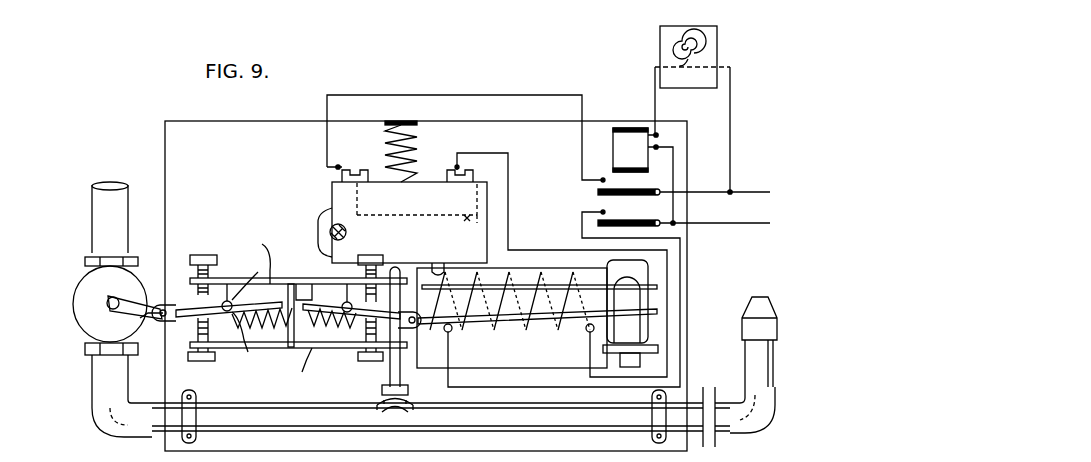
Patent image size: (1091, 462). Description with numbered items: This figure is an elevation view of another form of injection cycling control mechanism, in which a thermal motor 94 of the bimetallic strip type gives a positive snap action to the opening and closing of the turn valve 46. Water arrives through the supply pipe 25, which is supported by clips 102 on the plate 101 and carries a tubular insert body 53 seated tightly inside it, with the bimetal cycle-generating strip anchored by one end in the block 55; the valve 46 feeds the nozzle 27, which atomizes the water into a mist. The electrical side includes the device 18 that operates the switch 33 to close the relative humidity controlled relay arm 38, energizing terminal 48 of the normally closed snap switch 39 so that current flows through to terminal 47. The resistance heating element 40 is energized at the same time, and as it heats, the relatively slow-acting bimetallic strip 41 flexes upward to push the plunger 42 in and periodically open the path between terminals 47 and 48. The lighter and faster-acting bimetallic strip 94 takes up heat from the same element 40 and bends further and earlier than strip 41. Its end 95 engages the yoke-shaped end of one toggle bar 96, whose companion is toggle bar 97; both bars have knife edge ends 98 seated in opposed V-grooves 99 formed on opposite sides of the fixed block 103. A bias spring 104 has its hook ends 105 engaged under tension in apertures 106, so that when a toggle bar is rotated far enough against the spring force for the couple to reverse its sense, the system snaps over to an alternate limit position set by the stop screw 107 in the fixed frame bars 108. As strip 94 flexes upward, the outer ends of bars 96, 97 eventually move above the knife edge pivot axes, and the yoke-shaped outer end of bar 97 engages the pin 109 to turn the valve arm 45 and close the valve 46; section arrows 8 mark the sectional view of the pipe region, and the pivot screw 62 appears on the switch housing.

The section line arrows 8 is at (346, 396).
The device 18 is at (660, 44).
The supply pipe 25 is at (268, 422).
The nozzle 27 is at (742, 316).
The switch 33 is at (613, 148).
The relative humidity controlled relay arm 38 is at (650, 194).
The snap switch 39 is at (432, 182).
The resistance heating element 40 is at (530, 325).
The bimetallic strip 41 is at (524, 287).
The plunger 42 is at (438, 268).
The valve arm 45 is at (92, 308).
The valve 46 is at (88, 284).
The terminal 47 is at (340, 174).
The terminal 48 is at (472, 176).
The tubular insert body 53 is at (402, 414).
The block 55 is at (388, 414).
The pivot screw 62 is at (330, 232).
The thermal motor 94 is at (512, 317).
The end of strip 95 is at (423, 309).
The toggle bar 96 is at (354, 316).
The toggle bar 97 is at (242, 341).
The knife edge ends 98 is at (318, 284).
The V-grooves 99 is at (291, 348).
The plate 101 is at (520, 102).
The clips 102 is at (190, 396).
The fixed block 103 is at (257, 254).
The bias spring 104 is at (294, 309).
The hook ends 105 is at (262, 275).
The apertures 106 is at (222, 305).
The stop screw 107 is at (347, 256).
The fixed frame bars 108 is at (312, 348).
The pin 109 is at (163, 300).